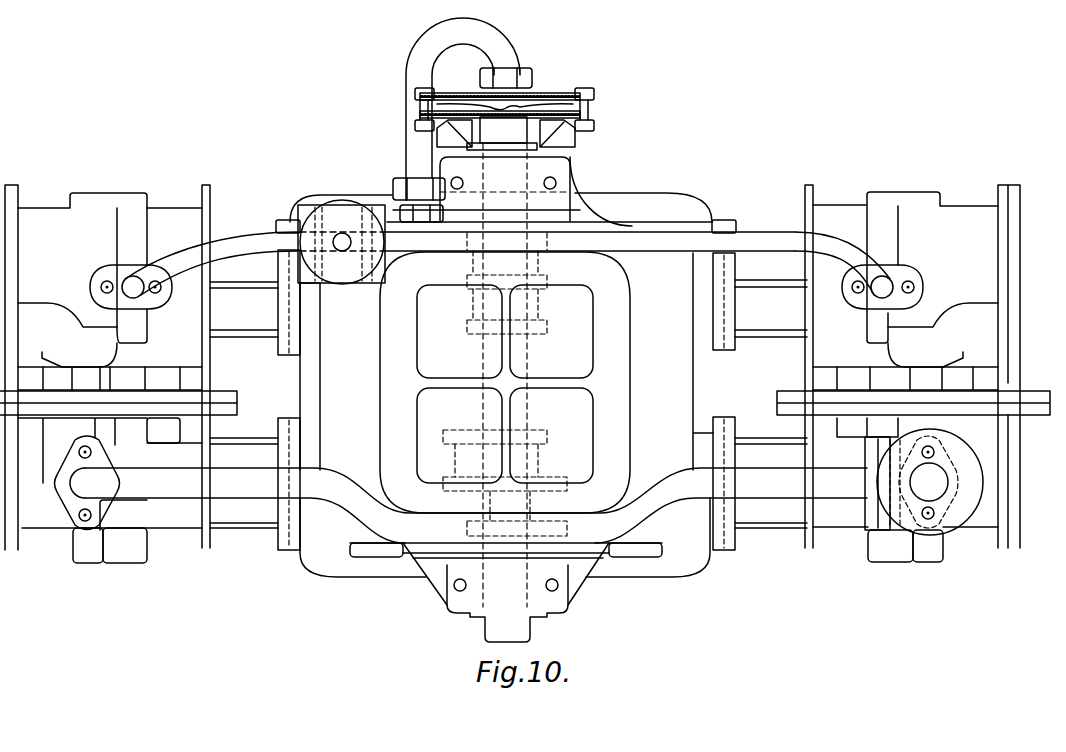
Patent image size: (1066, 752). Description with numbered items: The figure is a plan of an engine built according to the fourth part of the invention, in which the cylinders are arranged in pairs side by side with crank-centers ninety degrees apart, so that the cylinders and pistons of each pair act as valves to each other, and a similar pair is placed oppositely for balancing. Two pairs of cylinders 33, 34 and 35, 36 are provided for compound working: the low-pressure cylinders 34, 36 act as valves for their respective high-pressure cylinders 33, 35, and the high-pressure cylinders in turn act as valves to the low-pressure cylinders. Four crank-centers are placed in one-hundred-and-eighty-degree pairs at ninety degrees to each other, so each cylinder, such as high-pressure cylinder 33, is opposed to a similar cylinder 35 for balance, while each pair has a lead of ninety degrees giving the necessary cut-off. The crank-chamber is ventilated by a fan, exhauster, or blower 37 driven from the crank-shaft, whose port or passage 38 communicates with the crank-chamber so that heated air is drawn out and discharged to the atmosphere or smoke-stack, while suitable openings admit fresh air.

The high-pressure cylinder 33 is at (988, 513).
The low-pressure cylinder 34 is at (958, 223).
The high-pressure cylinder 35 is at (50, 515).
The low-pressure cylinder 36 is at (37, 220).
The fan, exhauster, or blower 37 is at (548, 110).
The port or passage 38 is at (408, 73).